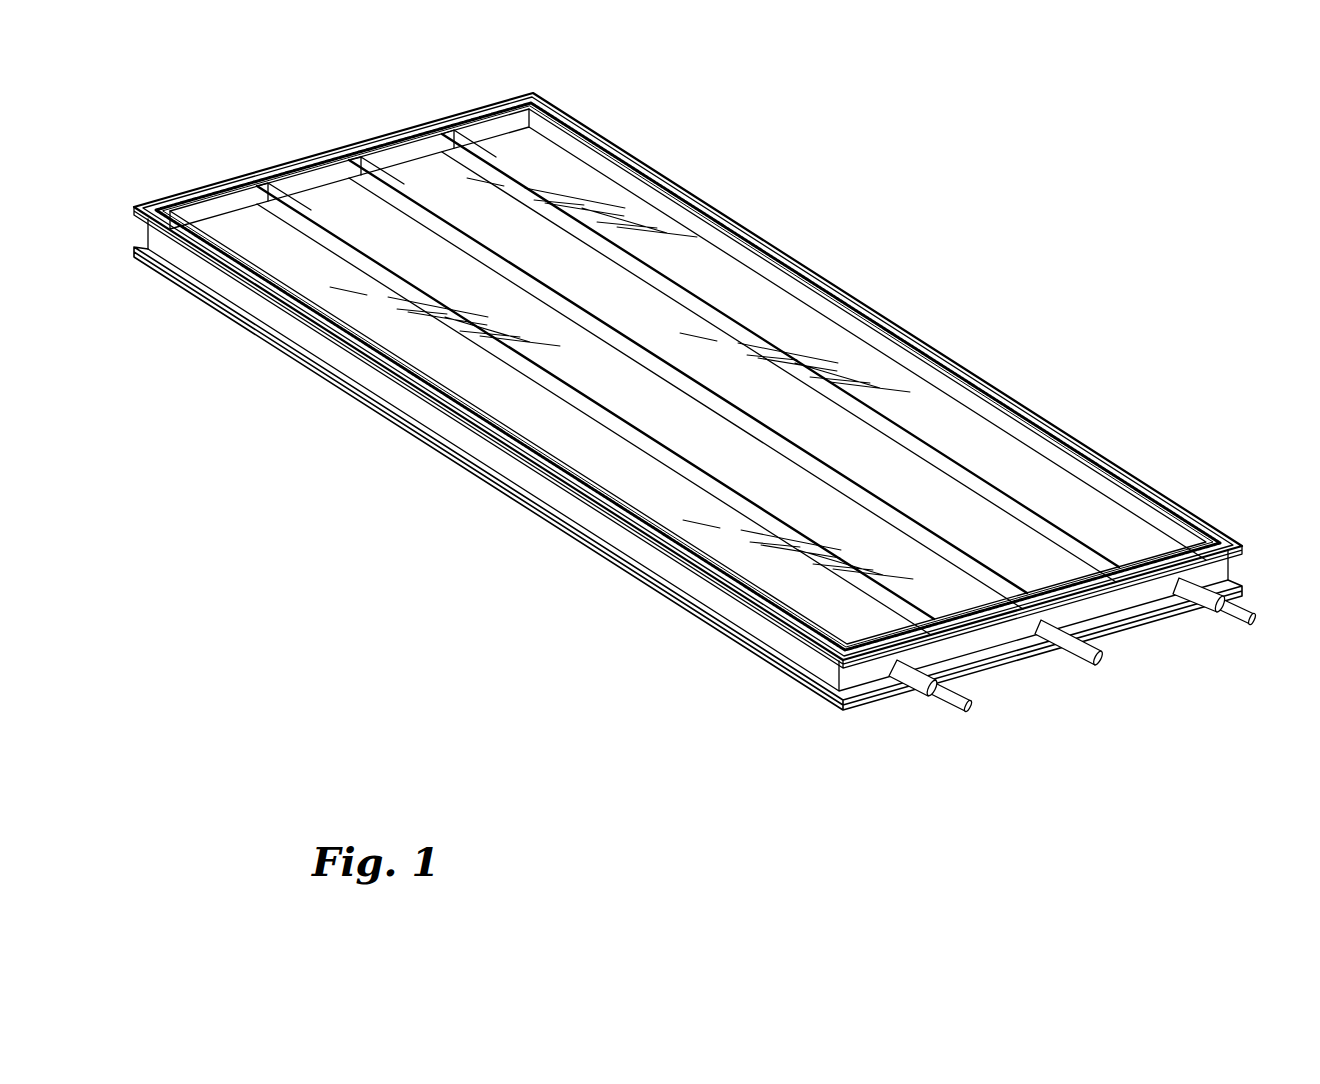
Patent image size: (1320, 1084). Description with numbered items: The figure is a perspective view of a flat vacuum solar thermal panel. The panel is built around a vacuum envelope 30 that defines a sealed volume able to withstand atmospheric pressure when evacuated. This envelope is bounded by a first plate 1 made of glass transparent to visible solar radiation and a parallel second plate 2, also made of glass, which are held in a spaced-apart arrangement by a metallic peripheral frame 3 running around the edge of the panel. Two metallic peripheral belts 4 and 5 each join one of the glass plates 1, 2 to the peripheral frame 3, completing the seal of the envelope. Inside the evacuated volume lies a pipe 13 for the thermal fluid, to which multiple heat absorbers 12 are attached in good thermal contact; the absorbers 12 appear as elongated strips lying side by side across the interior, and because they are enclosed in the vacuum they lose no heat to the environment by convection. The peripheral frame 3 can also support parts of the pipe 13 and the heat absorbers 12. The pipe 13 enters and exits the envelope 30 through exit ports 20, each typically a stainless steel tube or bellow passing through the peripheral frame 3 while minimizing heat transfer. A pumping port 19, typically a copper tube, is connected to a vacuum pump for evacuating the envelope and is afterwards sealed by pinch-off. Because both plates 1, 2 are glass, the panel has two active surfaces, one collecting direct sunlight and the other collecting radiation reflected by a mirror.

The first plate 1 is at (613, 138).
The second plate 2 is at (672, 600).
The peripheral frame 3 is at (520, 465).
The peripheral belt 4 is at (348, 352).
The peripheral belt 5 is at (410, 432).
The heat absorbers 12 is at (427, 177).
The pipe 13 is at (960, 703).
The pumping port 19 is at (1078, 657).
The exit port 20 is at (922, 690).
The vacuum envelope 30 is at (1070, 384).